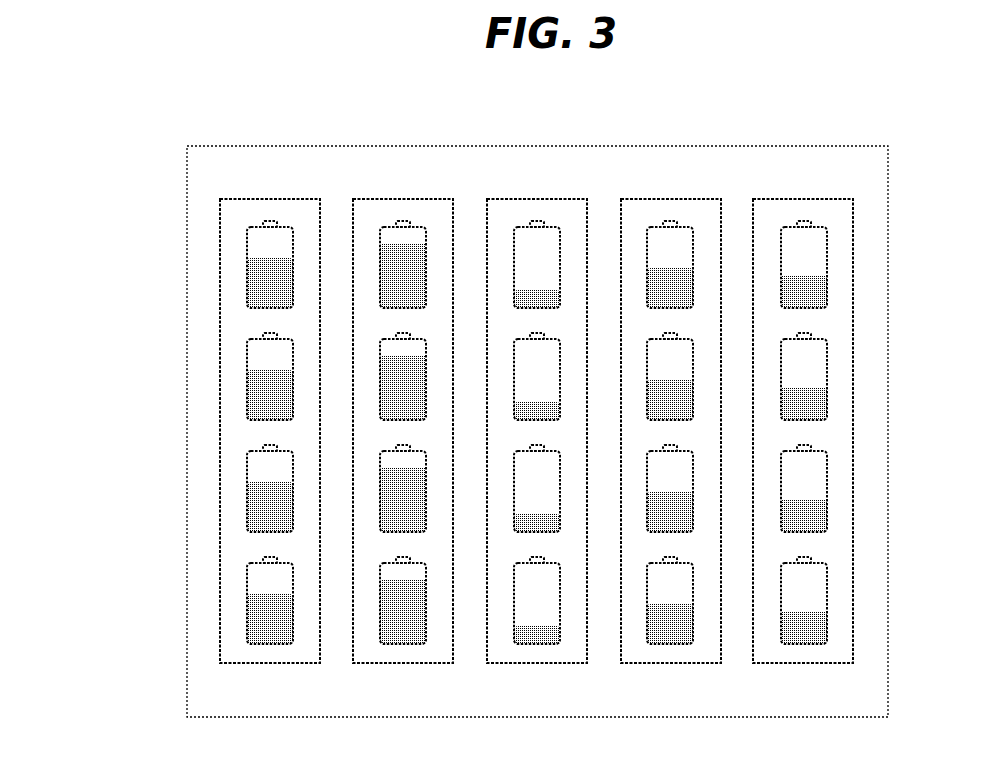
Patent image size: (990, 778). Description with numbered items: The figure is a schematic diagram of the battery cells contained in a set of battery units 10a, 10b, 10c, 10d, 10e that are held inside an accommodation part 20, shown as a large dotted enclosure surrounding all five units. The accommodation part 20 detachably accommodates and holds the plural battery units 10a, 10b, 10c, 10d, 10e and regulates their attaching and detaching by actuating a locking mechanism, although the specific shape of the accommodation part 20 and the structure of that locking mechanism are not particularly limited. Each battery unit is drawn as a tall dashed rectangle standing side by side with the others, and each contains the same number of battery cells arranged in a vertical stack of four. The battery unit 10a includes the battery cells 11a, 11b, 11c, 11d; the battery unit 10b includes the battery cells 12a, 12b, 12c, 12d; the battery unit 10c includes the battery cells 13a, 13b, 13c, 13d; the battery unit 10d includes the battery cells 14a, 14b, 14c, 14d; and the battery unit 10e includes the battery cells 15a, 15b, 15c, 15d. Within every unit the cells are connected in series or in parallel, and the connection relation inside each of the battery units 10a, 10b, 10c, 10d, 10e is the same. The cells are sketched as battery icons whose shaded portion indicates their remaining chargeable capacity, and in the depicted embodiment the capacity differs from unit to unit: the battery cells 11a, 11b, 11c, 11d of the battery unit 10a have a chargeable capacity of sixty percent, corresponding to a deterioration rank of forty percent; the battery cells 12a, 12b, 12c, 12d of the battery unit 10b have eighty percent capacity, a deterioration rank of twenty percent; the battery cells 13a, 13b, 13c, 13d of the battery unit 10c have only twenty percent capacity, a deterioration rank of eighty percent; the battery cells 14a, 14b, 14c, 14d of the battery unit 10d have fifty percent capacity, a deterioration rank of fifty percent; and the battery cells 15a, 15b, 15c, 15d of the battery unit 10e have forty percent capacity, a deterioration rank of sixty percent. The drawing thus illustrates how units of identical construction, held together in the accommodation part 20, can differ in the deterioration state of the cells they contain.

The accommodation part 20 is at (888, 660).
The battery unit 10a is at (268, 655).
The battery unit 10b is at (403, 655).
The battery unit 10c is at (537, 655).
The battery unit 10d is at (670, 655).
The battery unit 10e is at (803, 655).
The battery cell 11a is at (247, 246).
The battery cell 11b is at (247, 358).
The battery cell 11c is at (247, 470).
The battery cell 11d is at (247, 582).
The battery cell 12a is at (380, 242).
The battery cell 12b is at (380, 354).
The battery cell 12c is at (380, 466).
The battery cell 12d is at (380, 578).
The battery cell 13a is at (514, 242).
The battery cell 13b is at (514, 354).
The battery cell 13c is at (514, 466).
The battery cell 13d is at (514, 578).
The battery cell 14a is at (647, 242).
The battery cell 14b is at (647, 354).
The battery cell 14c is at (647, 466).
The battery cell 14d is at (647, 578).
The battery cell 15a is at (827, 250).
The battery cell 15b is at (827, 362).
The battery cell 15c is at (827, 474).
The battery cell 15d is at (827, 586).